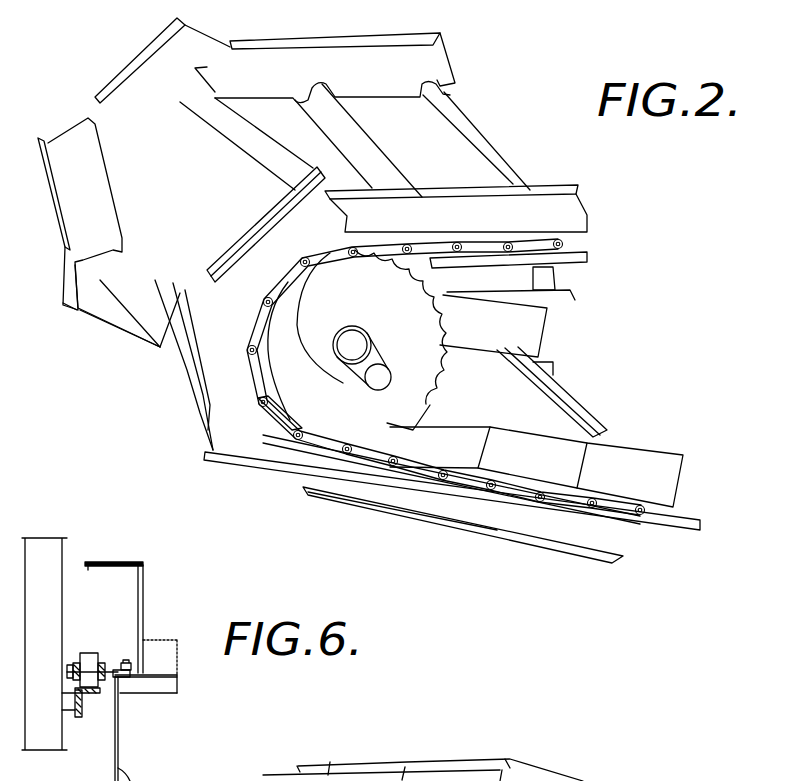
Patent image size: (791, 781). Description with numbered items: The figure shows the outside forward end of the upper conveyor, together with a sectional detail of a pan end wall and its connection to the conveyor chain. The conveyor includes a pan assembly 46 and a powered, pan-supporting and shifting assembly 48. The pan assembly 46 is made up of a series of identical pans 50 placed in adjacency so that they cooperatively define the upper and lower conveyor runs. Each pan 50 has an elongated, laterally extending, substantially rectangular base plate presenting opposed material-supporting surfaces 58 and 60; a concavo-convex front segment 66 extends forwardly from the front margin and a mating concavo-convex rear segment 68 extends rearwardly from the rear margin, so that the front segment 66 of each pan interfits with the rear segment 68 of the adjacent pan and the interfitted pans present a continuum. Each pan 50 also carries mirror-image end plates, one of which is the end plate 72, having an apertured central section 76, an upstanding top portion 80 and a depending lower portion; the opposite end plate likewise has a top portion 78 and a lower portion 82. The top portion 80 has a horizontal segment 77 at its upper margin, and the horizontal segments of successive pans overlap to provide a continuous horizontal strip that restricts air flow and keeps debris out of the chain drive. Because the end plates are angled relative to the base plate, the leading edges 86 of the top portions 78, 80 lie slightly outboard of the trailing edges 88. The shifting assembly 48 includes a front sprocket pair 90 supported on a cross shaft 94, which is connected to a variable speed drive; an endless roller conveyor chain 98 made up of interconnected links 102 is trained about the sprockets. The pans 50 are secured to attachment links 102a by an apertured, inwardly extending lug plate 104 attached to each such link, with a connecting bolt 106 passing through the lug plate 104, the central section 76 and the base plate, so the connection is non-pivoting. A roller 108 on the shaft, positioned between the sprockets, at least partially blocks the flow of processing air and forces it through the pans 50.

In FIG. 2, the pan assembly 46 is at (488, 117).
In FIG. 2, the pan supporting and shifting assembly 48 is at (610, 393).
In FIG. 2, the pan 50 is at (160, 365).
In FIG. 6, the pan 50 is at (185, 686).
In FIG. 2, the material-supporting surface 58 is at (368, 100).
In FIG. 2, the material-supporting surface 60 is at (537, 420).
In FIG. 2, the front segment 66 is at (557, 390).
In FIG. 6, the front segment 66 is at (165, 693).
In FIG. 2, the rear segment 68 is at (450, 106).
In FIG. 6, the rear segment 68 is at (170, 660).
In FIG. 2, the end plate 72 is at (458, 52).
In FIG. 6, the end plate 72 is at (146, 563).
In FIG. 6, the central section 76 is at (135, 677).
In FIG. 6, the horizontal segment 77 is at (115, 563).
In FIG. 2, the top portion 78 is at (553, 200).
In FIG. 2, the top portion 80 is at (367, 50).
In FIG. 6, the top portion 80 is at (143, 598).
In FIG. 2, the lower portion 82 is at (533, 283).
In FIG. 6, the lower portion 82 is at (135, 584).
In FIG. 2, the leading edge 86 is at (563, 543).
In FIG. 2, the trailing edge 88 is at (587, 217).
In FIG. 2, the front sprocket pair 90 is at (457, 323).
In FIG. 2, the cross shaft 94 is at (360, 370).
In FIG. 2, the endless roller conveyor chain 98 is at (558, 240).
In FIG. 2, the link 102 is at (280, 413).
In FIG. 2, the attachment link 102a is at (288, 282).
In FIG. 6, the attachment link 102a is at (68, 665).
In FIG. 6, the lug plate 104 is at (120, 668).
In FIG. 6, the connecting bolt 106 is at (131, 667).
In FIG. 6, the roller 108 is at (88, 703).